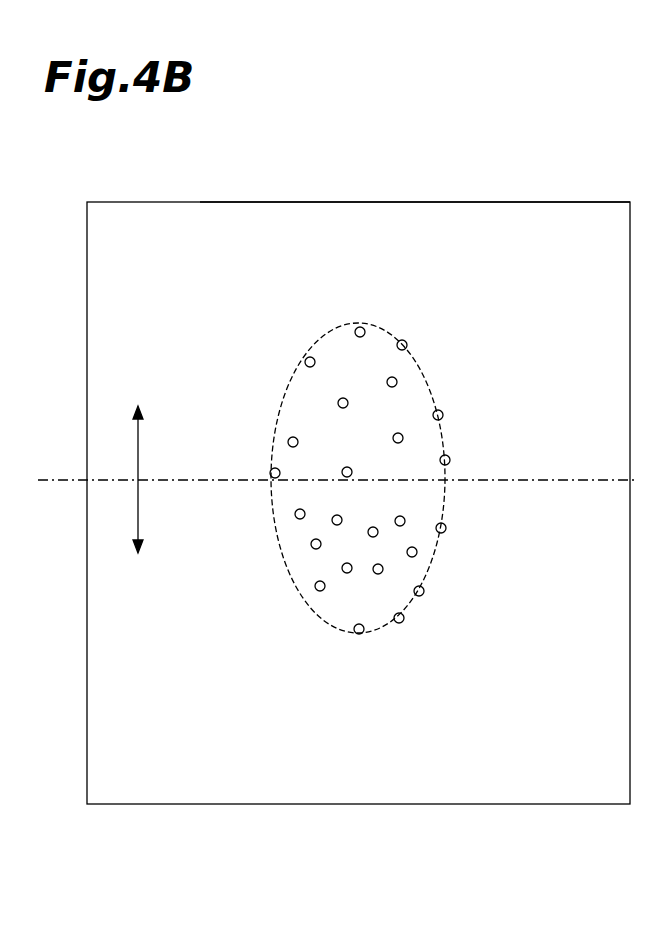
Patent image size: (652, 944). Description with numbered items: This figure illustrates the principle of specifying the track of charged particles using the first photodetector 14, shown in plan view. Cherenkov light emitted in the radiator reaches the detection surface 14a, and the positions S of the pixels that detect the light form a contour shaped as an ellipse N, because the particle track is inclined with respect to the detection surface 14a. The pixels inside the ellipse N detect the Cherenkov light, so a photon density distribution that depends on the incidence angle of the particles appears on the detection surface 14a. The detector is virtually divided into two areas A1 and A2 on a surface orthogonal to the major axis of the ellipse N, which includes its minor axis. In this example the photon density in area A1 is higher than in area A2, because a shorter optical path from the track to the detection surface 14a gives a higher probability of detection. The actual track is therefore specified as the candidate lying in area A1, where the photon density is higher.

The first photodetector 14 is at (352, 201).
The detection surface 14a is at (445, 226).
The positions S is at (396, 378).
The ellipse N is at (437, 553).
The area A1 is at (136, 533).
The area A2 is at (136, 429).